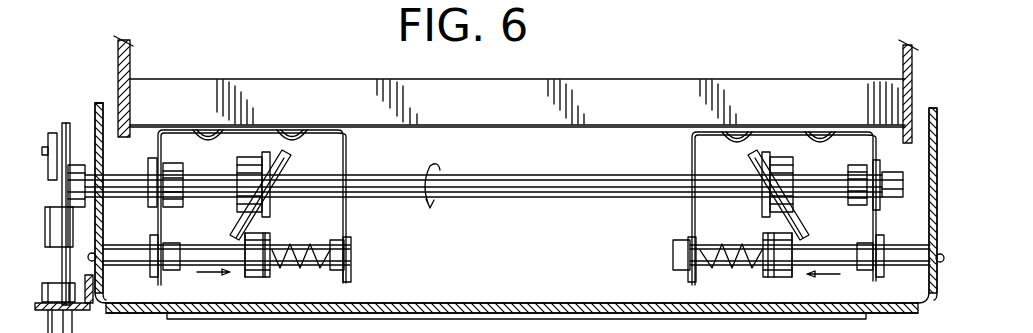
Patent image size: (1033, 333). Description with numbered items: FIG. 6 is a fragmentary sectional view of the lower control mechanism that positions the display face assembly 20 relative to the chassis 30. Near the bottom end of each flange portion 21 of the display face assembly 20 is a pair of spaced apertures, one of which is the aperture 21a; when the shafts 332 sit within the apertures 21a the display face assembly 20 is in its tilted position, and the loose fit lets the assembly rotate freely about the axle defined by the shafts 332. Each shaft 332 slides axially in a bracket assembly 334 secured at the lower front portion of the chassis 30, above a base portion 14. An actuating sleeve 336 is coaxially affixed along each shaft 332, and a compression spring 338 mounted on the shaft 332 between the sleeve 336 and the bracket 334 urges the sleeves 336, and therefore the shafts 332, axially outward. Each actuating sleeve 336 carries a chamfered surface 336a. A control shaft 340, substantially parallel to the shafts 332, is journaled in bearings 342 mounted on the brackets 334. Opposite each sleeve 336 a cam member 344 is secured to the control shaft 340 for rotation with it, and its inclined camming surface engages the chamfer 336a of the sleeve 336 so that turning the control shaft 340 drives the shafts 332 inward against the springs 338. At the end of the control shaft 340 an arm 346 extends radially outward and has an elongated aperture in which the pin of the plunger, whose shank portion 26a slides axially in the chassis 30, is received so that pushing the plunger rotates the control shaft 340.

The base strip 14 is at (216, 313).
The display face assembly 20 is at (478, 303).
The flange portion 21 is at (104, 222).
The aperture 21a is at (99, 147).
The shank portion 26a is at (63, 127).
The chassis 30 is at (130, 60).
The shaft 332 is at (125, 255).
The bracket assembly 334 is at (350, 153).
The actuating sleeve 336 is at (262, 268).
The chamfered surface 336a is at (257, 262).
The compression spring 338 is at (302, 256).
The control shaft 340 is at (533, 190).
The bearing 342 is at (173, 165).
The cam member 344 is at (240, 160).
The arm 346 is at (50, 137).